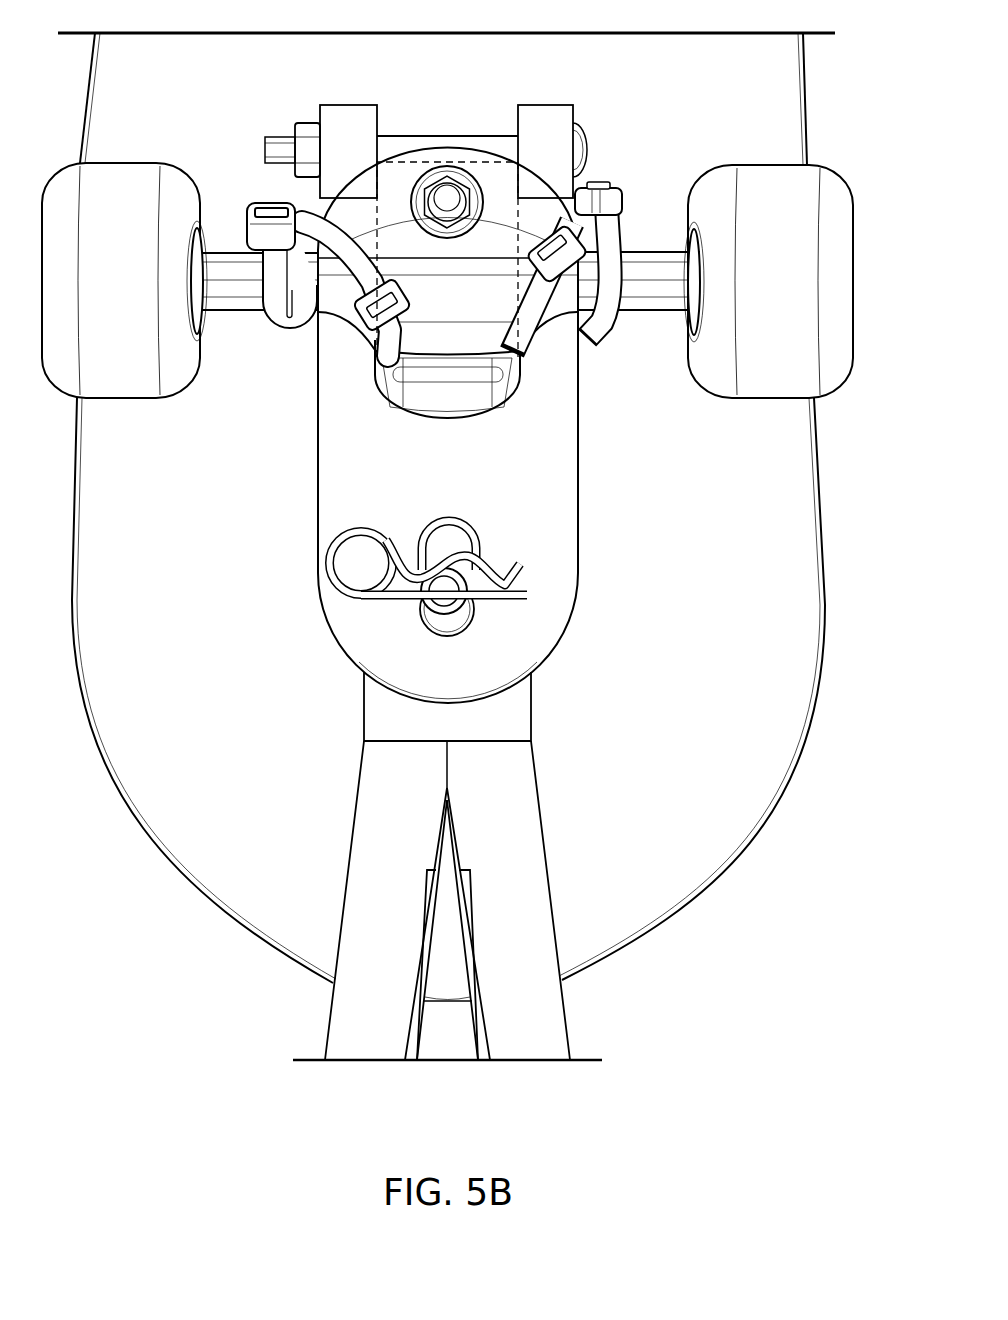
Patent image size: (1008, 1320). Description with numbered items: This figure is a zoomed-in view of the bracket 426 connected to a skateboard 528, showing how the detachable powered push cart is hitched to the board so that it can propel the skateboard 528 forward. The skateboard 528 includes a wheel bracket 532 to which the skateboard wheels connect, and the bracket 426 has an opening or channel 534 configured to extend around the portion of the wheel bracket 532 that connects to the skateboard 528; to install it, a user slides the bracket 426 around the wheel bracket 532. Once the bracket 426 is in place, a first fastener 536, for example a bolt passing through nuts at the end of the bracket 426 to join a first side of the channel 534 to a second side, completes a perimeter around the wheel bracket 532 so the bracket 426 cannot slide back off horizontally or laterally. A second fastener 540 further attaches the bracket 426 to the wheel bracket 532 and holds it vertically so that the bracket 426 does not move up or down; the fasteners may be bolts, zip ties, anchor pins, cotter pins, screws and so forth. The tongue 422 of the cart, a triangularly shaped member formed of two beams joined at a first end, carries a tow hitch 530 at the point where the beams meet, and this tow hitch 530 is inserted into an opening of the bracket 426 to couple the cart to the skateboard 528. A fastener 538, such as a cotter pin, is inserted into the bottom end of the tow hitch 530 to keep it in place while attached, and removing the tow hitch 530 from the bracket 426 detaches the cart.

The skateboard 528 is at (810, 742).
The wheel bracket 532 is at (248, 303).
The bracket 426 is at (586, 546).
The first fastener 536 is at (433, 113).
The opening or channel 534 is at (514, 292).
The second fastener 540 is at (378, 345).
The tow hitch 530 is at (465, 610).
The fastener 538 is at (336, 530).
The tongue 422 is at (559, 850).